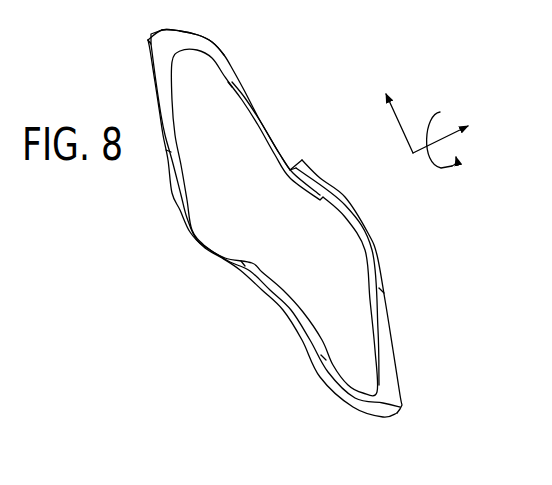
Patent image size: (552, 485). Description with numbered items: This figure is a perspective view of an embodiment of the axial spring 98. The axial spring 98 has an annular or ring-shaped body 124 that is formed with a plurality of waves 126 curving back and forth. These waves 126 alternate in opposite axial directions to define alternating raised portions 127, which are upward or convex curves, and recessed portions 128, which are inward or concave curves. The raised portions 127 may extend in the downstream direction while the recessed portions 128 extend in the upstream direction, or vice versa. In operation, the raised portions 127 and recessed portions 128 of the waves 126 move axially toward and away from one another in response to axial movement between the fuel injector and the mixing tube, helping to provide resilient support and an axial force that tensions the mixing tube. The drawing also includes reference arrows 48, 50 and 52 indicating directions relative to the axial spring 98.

The axial spring 98 is at (128, 74).
The body 124 is at (179, 207).
The waves 126 is at (220, 43).
The raised portions 127 is at (283, 311).
The recessed portions 128 is at (262, 125).
The rotation axis 48 is at (434, 162).
The first axis 50 is at (397, 126).
The second axis 52 is at (440, 112).